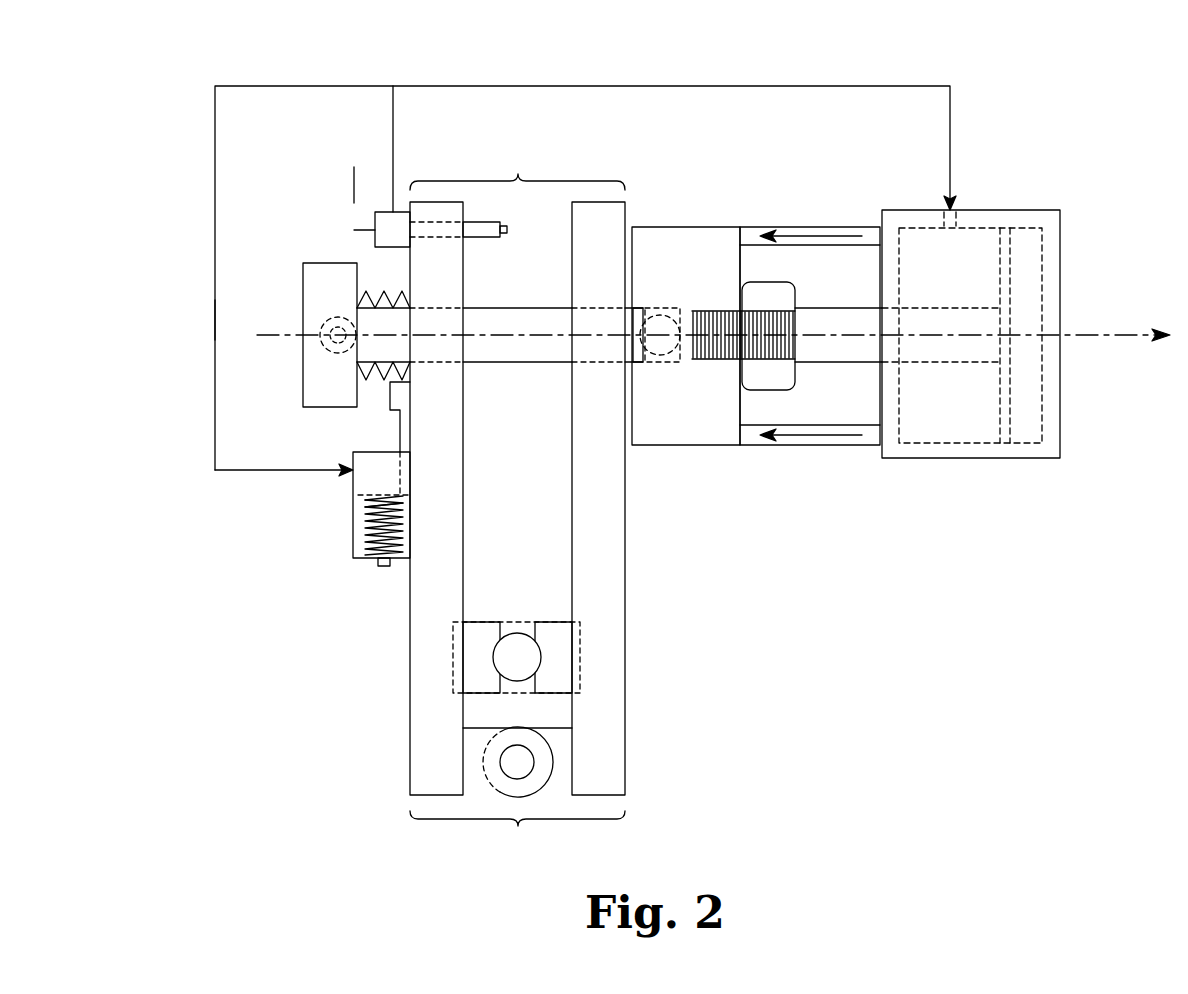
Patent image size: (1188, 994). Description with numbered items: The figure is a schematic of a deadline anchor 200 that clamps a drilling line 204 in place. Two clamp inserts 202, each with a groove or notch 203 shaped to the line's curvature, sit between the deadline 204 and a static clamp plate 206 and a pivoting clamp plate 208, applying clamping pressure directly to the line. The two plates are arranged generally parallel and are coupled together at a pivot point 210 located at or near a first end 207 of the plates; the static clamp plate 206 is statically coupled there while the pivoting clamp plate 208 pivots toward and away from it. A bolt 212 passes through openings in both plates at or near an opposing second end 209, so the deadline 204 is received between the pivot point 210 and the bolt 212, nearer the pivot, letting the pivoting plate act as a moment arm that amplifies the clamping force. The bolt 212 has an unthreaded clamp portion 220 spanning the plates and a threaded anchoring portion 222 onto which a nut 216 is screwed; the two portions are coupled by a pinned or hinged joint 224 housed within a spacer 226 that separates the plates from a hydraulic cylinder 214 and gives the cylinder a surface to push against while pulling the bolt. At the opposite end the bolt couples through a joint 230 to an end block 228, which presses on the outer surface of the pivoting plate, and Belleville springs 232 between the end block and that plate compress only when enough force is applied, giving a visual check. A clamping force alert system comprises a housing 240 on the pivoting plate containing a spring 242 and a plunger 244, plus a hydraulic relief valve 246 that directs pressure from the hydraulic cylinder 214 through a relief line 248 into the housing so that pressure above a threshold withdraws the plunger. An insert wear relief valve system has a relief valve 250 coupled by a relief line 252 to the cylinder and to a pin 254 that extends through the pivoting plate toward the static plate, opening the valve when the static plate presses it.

The deadline anchor 200 is at (1076, 104).
The clamp inserts 202 is at (500, 623).
The groove or notch 203 is at (540, 655).
The drilling line 204 is at (507, 658).
The static clamp plate 206 is at (615, 778).
The first end 207 is at (517, 833).
The pivoting clamp plate 208 is at (420, 778).
The second end 209 is at (517, 167).
The pivot point 210 is at (517, 762).
The bolt 212 is at (520, 306).
The hydraulic cylinder 214 is at (1010, 210).
The nut 216 is at (755, 282).
The clamp portion 220 is at (518, 364).
The anchoring portion 222 is at (710, 357).
The joint 224 is at (653, 340).
The spacer 226 is at (687, 227).
The end block 228 is at (313, 278).
The joint 230 is at (338, 338).
The Belleville springs 232 is at (370, 290).
The housing 240 is at (353, 530).
The spring 242 is at (365, 545).
The plunger 244 is at (393, 410).
The hydraulic relief valve 246 is at (215, 318).
The relief line 248 is at (310, 86).
The relief valve 250 is at (385, 214).
The relief line 252 is at (395, 100).
The pin 254 is at (472, 226).